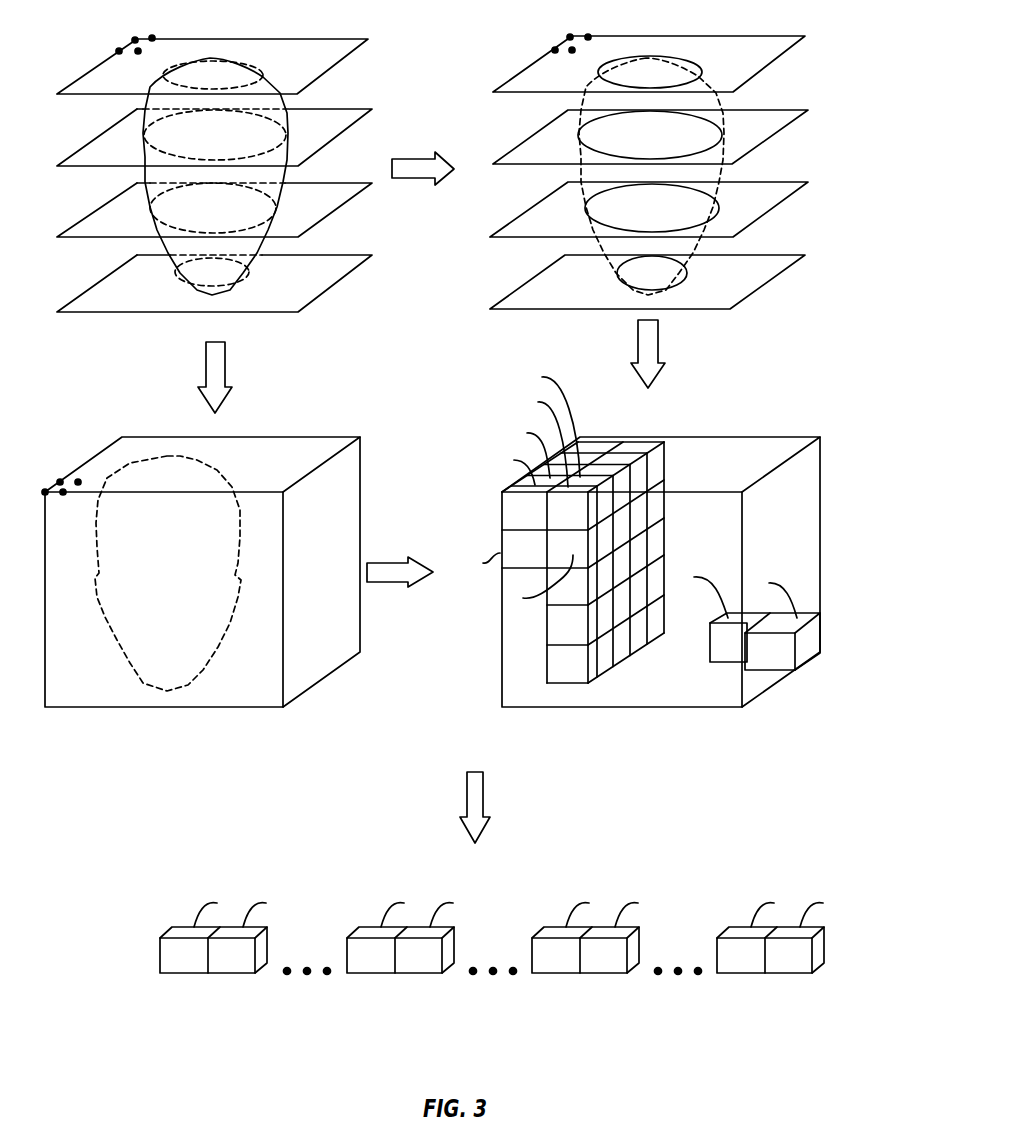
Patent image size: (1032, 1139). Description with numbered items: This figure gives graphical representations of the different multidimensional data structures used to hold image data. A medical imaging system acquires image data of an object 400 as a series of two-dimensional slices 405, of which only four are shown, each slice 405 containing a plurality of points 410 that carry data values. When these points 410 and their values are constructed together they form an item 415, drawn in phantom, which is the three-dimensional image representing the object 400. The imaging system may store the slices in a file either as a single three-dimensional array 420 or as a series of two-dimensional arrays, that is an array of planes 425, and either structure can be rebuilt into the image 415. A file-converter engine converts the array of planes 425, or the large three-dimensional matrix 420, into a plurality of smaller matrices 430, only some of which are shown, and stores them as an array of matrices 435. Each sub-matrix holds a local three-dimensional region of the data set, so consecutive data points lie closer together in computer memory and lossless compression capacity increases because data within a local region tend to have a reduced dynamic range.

The object 400 is at (267, 73).
The slices 405 is at (366, 48).
The points 410 is at (135, 38).
The item 415 is at (630, 287).
The 3D array 420 is at (587, 685).
The series of 2D arrays 425 is at (820, 29).
The plurality of matrices 430 is at (833, 425).
The array of matrices 435 is at (845, 983).